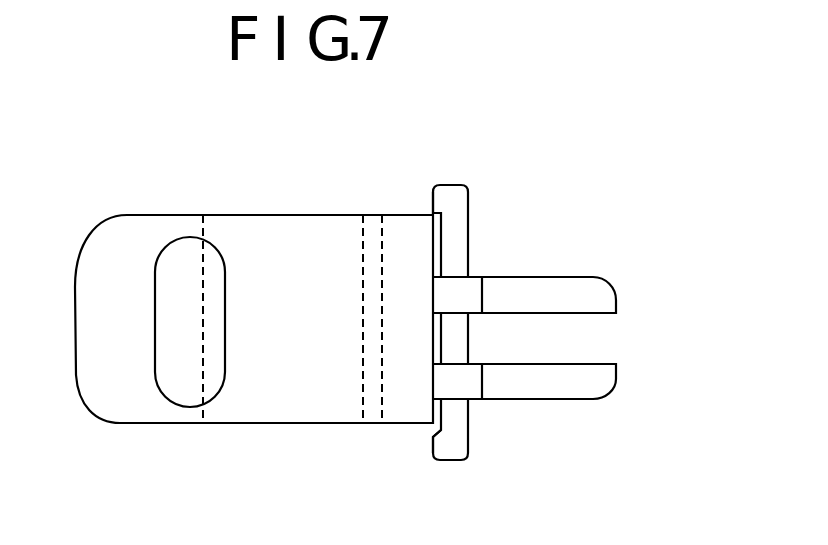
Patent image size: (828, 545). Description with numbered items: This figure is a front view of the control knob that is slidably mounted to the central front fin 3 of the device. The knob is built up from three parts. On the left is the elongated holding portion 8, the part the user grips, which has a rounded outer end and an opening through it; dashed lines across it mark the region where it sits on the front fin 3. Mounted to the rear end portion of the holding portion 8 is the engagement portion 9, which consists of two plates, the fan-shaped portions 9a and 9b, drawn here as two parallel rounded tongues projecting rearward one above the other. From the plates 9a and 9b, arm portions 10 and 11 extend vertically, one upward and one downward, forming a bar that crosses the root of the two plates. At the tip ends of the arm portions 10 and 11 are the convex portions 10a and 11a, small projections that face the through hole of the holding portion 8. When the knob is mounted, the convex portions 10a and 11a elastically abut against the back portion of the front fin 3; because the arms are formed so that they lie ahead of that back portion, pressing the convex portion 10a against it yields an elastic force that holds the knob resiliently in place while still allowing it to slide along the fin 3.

The central front fin 3 is at (303, 208).
The holding portion 8 is at (103, 378).
The engagement portion 9 is at (565, 303).
The plate (fan-shaped portion) 9a is at (590, 295).
The plate (fan-shaped portion) 9b is at (593, 383).
The arm portion 10 is at (439, 238).
The convex portion 10a is at (441, 197).
The arm portion 11 is at (483, 460).
The convex portion 11a is at (441, 447).